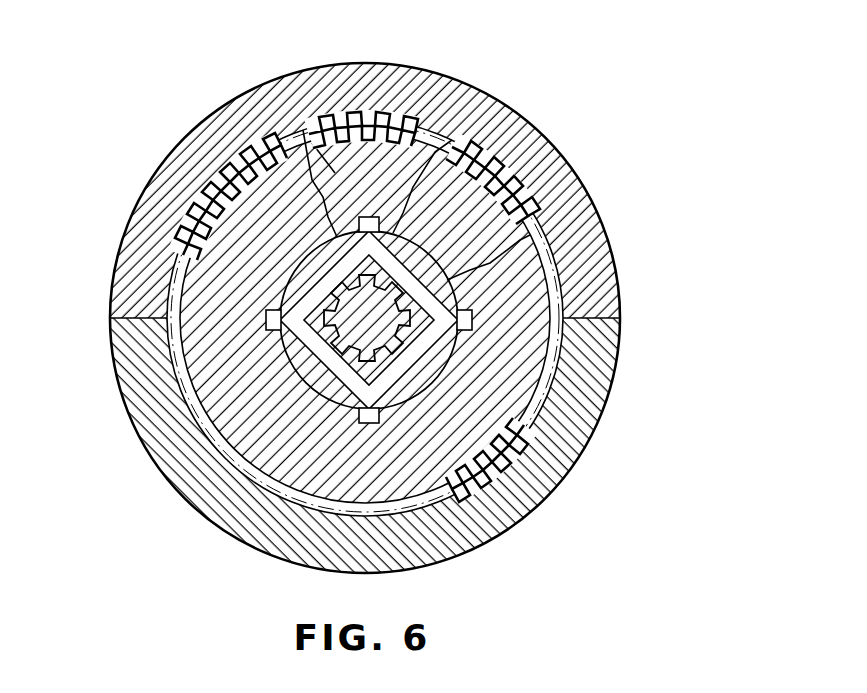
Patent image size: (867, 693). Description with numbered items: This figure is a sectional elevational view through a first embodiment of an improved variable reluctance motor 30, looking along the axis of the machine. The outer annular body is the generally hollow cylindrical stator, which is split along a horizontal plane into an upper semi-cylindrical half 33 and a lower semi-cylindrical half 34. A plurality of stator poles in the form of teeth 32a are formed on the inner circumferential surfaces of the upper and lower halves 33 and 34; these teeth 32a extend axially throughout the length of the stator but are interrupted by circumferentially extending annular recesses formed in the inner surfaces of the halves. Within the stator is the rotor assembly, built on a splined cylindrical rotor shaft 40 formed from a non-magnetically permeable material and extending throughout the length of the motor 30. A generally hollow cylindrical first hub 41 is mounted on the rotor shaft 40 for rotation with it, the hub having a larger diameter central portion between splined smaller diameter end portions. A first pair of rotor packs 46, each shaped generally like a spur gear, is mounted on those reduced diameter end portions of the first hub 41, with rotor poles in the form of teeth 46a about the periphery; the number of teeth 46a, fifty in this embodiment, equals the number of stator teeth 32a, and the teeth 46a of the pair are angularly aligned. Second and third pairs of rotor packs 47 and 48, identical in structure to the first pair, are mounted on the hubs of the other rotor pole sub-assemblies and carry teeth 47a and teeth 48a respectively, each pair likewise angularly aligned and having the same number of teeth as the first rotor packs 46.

The variable reluctance motor 30 is at (632, 124).
The stator teeth 32a is at (333, 117).
The upper semi-cylindrical stator half 33 is at (480, 90).
The lower semi-cylindrical stator half 34 is at (245, 523).
The splined cylindrical rotor shaft 40 is at (377, 297).
The first hub 41 is at (384, 392).
The first rotor packs 46 is at (205, 332).
The first rotor pack teeth 46a is at (232, 172).
The second rotor packs 47 is at (303, 128).
The second rotor pack teeth 47a is at (395, 118).
The third rotor packs 48 is at (507, 232).
The third rotor pack teeth 48a is at (522, 208).